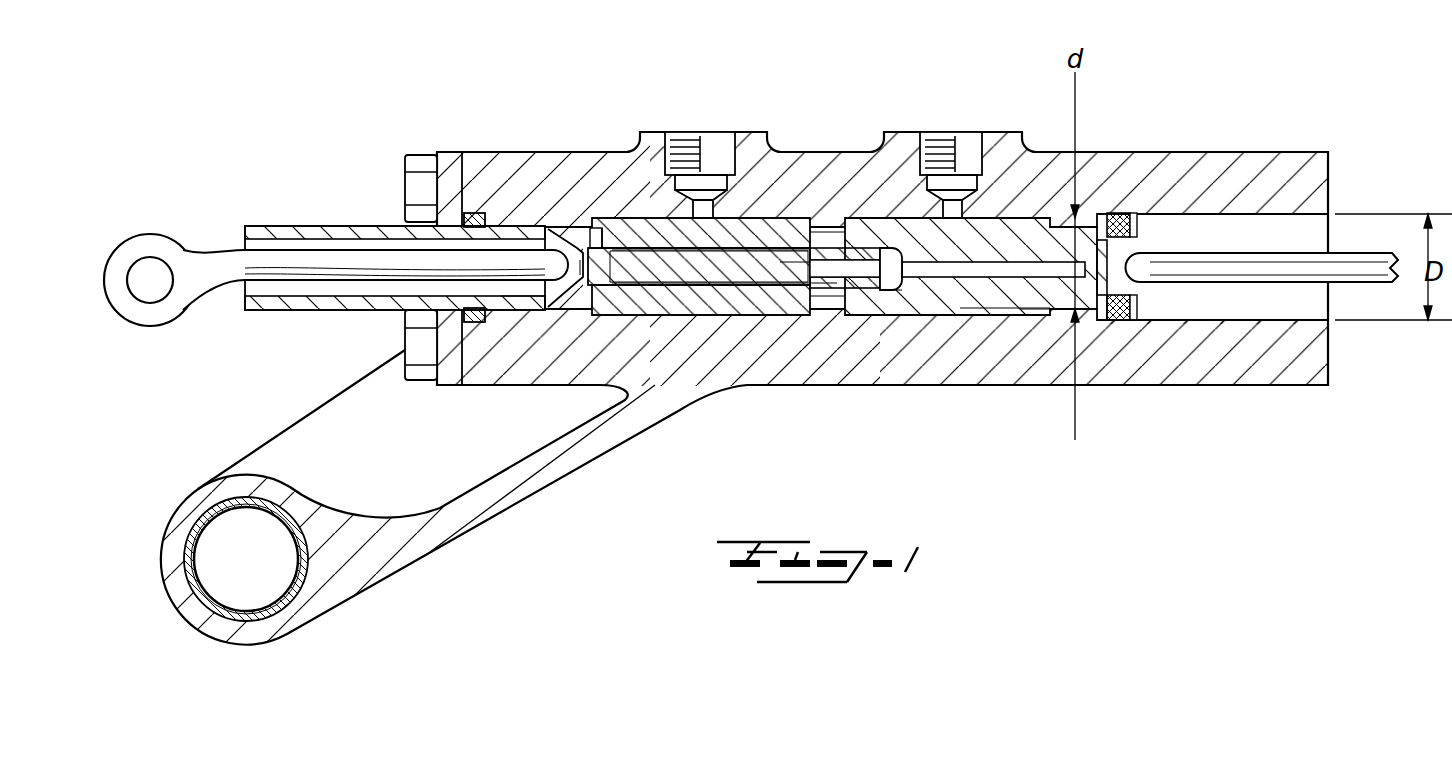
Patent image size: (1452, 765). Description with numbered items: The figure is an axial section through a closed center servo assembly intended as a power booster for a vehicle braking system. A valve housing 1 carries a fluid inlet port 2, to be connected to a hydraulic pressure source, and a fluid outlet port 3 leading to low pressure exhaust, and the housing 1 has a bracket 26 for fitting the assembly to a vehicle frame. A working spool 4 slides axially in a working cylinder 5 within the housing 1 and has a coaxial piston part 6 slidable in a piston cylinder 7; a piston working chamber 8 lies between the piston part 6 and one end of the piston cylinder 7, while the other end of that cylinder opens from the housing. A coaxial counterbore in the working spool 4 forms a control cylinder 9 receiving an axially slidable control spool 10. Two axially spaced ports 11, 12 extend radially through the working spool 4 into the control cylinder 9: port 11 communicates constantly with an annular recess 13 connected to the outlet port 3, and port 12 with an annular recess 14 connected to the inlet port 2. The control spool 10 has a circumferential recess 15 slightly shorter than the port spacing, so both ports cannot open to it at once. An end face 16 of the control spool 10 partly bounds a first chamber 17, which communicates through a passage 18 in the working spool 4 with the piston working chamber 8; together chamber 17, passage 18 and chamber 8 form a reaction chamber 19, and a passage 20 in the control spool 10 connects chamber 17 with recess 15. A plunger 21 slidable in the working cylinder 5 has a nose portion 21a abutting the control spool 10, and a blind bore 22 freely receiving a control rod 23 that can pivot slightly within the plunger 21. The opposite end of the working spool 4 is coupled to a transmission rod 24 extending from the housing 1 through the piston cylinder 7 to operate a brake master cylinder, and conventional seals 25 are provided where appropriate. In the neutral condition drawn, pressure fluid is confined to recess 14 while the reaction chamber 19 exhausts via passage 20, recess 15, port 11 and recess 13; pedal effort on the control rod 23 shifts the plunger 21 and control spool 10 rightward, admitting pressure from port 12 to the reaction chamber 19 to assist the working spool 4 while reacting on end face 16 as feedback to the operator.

The valve housing 1 is at (545, 158).
The fluid inlet port 2 is at (960, 147).
The fluid outlet port 3 is at (708, 143).
The working spool 4 is at (993, 300).
The working cylinder 5 is at (508, 322).
The piston part 6 is at (1137, 310).
The piston cylinder 7 is at (1243, 321).
The piston working chamber 8 is at (1120, 213).
The control cylinder 9 is at (838, 246).
The control spool 10 is at (717, 270).
The port 11 is at (612, 235).
The port 12 is at (852, 232).
The annular recess 13 is at (617, 235).
The annular recess 14 is at (1033, 310).
The circumferential recess 15 is at (737, 288).
The end face 16 is at (885, 256).
The first chamber 17 is at (890, 290).
The passage 18 is at (1010, 270).
The reaction chamber 19 is at (907, 286).
The passage 20 is at (807, 263).
The plunger 21 is at (320, 225).
The nose portion 21a is at (553, 234).
The blind bore 22 is at (247, 243).
The control rod 23 is at (238, 282).
The transmission rod 24 is at (1347, 258).
The pressure seals and/or ring seals 25 is at (476, 213).
The bracket 26 is at (360, 575).